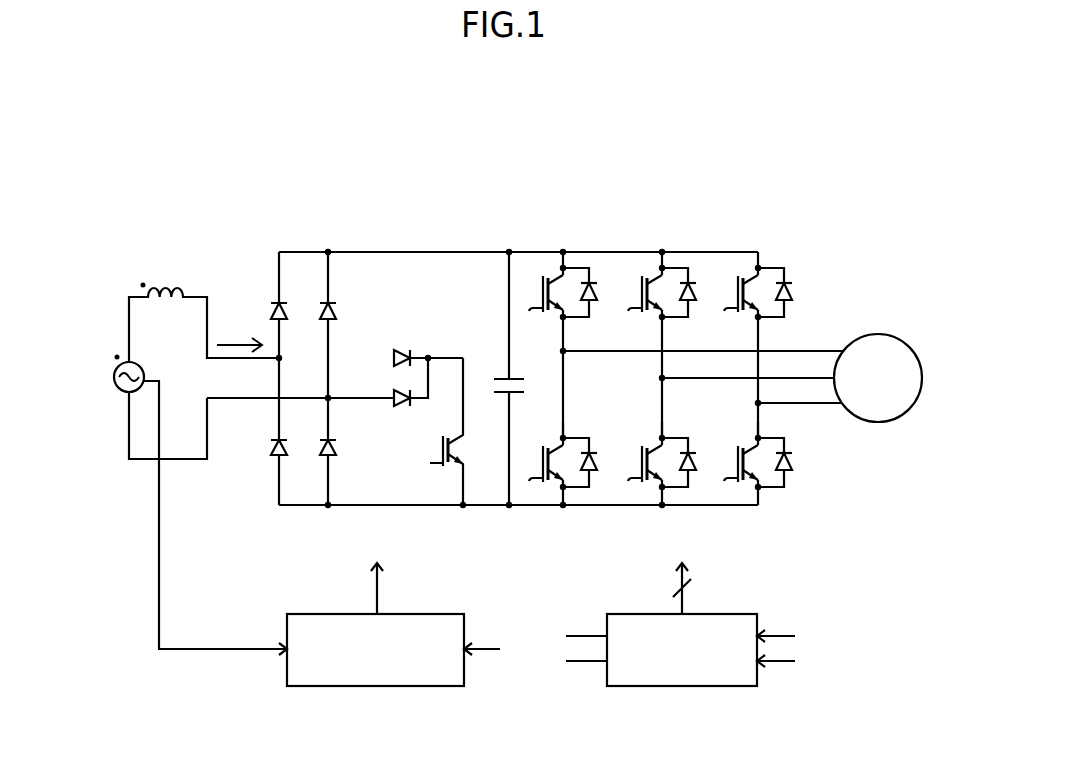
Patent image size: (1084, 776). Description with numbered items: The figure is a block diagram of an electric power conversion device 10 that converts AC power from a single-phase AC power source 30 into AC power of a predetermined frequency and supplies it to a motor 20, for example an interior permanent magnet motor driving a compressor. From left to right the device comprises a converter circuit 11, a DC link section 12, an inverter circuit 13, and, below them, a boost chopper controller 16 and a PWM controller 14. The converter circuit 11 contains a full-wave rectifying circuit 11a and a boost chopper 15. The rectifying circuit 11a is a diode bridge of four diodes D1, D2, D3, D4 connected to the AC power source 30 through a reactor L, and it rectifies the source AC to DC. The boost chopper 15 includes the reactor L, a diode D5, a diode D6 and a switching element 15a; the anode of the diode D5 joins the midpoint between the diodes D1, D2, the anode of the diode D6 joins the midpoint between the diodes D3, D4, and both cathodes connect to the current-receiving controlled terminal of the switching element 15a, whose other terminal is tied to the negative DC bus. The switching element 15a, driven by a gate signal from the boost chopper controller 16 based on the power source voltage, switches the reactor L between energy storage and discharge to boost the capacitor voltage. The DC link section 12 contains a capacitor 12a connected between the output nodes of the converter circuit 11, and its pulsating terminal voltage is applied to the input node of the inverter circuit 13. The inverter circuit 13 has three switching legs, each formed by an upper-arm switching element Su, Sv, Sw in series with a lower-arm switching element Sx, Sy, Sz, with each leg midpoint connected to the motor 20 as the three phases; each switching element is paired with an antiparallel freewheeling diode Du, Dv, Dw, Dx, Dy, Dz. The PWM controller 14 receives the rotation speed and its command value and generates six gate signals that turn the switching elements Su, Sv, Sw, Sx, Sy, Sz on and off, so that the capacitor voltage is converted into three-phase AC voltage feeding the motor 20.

The electric power conversion device 10 is at (529, 179).
The converter circuit 11 is at (313, 521).
The full-wave rectifying circuit 11a is at (266, 456).
The DC link section 12 is at (505, 521).
The capacitor 12a is at (522, 394).
The inverter circuit 13 is at (611, 521).
The PWM controller 14 is at (690, 688).
The boost chopper 15 is at (451, 312).
The switching element 15a is at (430, 463).
The boost chopper controller 16 is at (375, 688).
The motor 20 is at (878, 333).
The single-phase AC power source 30 is at (120, 395).
The reactor L is at (162, 283).
The diode D1 is at (275, 302).
The diode D2 is at (275, 438).
The diode D3 is at (343, 292).
The diode D4 is at (334, 438).
The diode D5 is at (412, 351).
The diode D6 is at (412, 405).
The upper-arm switching element Su is at (533, 309).
The upper-arm switching element Sv is at (632, 309).
The upper-arm switching element Sw is at (728, 309).
The lower-arm switching element Sx is at (533, 479).
The lower-arm switching element Sy is at (632, 479).
The lower-arm switching element Sz is at (728, 479).
The freewheeling diode Du is at (592, 280).
The freewheeling diode Dv is at (692, 280).
The freewheeling diode Dw is at (789, 280).
The freewheeling diode Dx is at (592, 451).
The freewheeling diode Dy is at (692, 451).
The freewheeling diode Dz is at (789, 451).